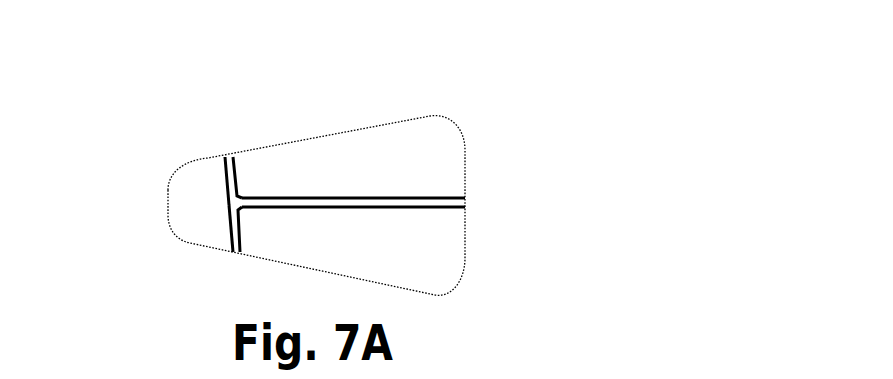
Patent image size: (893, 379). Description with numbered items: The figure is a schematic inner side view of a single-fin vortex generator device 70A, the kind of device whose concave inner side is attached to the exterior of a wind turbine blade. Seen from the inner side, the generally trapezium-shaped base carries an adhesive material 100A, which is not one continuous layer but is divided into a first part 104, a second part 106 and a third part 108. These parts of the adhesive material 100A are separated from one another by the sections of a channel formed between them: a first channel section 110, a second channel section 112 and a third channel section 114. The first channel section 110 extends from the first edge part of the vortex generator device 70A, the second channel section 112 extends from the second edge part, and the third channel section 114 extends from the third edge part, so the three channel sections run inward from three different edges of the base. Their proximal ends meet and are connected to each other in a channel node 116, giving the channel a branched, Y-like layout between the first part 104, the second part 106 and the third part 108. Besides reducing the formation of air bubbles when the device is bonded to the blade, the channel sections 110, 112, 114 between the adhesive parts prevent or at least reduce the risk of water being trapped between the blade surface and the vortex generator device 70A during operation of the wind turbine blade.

The vortex generator device 70A is at (220, 114).
The adhesive material 100A is at (291, 177).
The first part 104 is at (188, 208).
The second part 106 is at (437, 139).
The third part 108 is at (432, 255).
The first channel section 110 is at (232, 174).
The second channel section 112 is at (233, 233).
The third channel section 114 is at (445, 203).
The channel node 116 is at (255, 198).